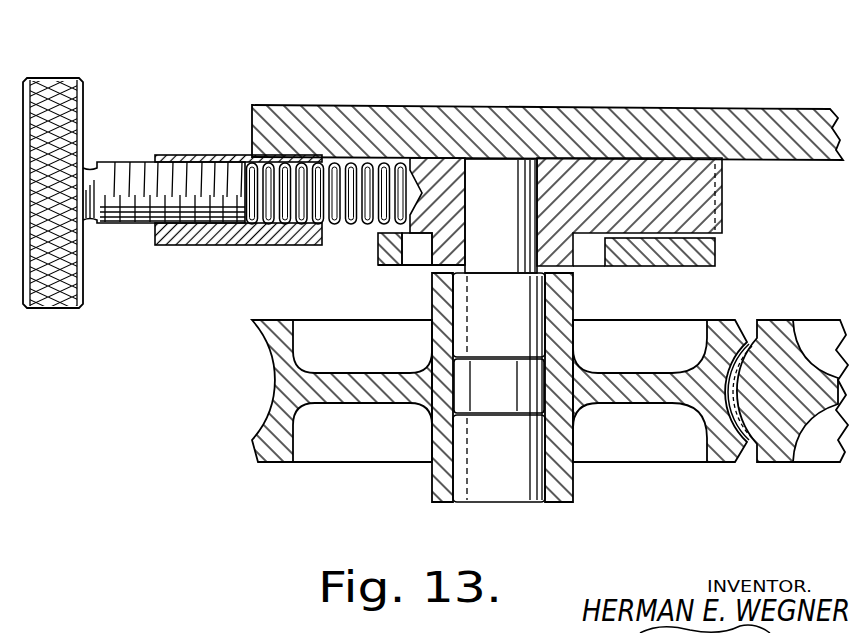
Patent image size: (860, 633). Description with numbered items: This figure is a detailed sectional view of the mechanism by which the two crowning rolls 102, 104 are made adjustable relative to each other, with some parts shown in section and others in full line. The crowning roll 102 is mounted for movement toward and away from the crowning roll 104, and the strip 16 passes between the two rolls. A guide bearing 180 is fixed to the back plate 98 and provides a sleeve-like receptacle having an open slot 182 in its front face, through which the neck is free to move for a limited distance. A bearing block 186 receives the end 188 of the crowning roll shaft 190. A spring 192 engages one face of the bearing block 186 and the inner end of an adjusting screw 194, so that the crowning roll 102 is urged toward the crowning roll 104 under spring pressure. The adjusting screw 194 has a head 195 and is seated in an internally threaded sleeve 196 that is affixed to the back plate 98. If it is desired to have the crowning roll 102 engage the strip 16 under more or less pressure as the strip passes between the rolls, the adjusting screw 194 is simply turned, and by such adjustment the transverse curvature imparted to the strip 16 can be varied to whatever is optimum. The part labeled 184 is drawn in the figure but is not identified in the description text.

The strip 16 is at (733, 415).
The back plate 98 is at (355, 122).
The crowning roll 102 is at (335, 447).
The crowning roll 104 is at (810, 332).
The guide bearing 180 is at (625, 257).
The open slot 182 is at (413, 255).
The retainer plate 184 is at (437, 267).
The bearing block 186 is at (565, 178).
The end of the crowning roll shaft 188 is at (482, 170).
The crowning roll shaft 190 is at (504, 395).
The spring 192 is at (290, 172).
The adjusting screw 194 is at (208, 173).
The head 195 is at (48, 90).
The internally threaded sleeve 196 is at (172, 157).